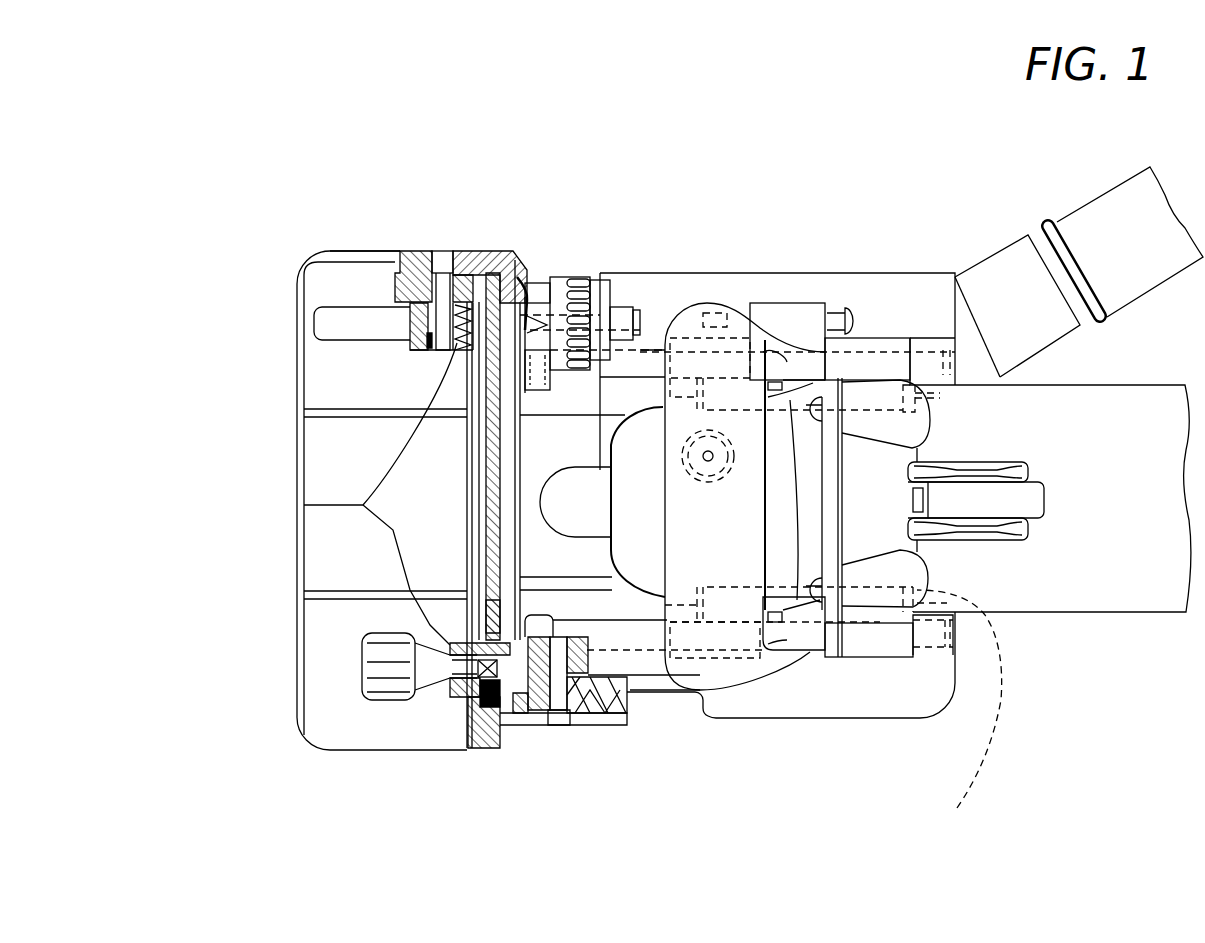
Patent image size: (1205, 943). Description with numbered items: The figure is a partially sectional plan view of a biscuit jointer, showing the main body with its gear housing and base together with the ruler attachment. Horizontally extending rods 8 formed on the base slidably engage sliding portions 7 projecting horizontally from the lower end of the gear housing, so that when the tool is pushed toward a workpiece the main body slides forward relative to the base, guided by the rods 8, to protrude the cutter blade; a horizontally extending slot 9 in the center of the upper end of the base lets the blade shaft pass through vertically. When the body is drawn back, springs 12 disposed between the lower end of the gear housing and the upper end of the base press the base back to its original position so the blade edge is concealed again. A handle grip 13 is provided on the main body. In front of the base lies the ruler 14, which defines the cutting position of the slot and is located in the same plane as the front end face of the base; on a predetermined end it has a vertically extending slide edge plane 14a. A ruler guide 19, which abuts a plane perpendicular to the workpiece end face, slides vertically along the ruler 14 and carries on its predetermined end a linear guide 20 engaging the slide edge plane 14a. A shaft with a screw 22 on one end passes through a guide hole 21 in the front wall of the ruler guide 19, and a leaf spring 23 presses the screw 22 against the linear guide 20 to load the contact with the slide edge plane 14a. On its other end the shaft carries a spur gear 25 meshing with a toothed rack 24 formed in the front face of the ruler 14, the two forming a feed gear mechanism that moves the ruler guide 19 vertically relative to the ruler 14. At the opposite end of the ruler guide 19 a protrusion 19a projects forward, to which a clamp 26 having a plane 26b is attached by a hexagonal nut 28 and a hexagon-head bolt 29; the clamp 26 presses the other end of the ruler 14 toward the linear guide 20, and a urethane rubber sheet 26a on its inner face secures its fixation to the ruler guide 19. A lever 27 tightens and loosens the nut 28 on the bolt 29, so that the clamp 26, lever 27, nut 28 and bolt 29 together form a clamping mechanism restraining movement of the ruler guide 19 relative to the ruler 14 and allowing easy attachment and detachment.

The sliding portions 7 is at (882, 303).
The rods 8 is at (657, 262).
The slot 9 is at (598, 273).
The springs 12 is at (703, 325).
The handle grip 13 is at (731, 560).
The ruler 14 is at (487, 538).
The slide edge plane 14a is at (500, 720).
The ruler guide 19 is at (314, 466).
The protrusion 19a is at (390, 285).
The linear guide 20 is at (476, 750).
The guide hole 21 is at (453, 700).
The screw 22 is at (420, 668).
The leaf spring 23 is at (450, 647).
The toothed rack 24 is at (530, 725).
The spur gear 25 is at (553, 723).
The clamp 26 is at (488, 253).
The urethane rubber sheet 26a is at (517, 258).
The plane 26b is at (382, 256).
The lever 27 is at (321, 325).
The hexagonal nut 28 is at (407, 330).
The bolt 29 is at (437, 253).